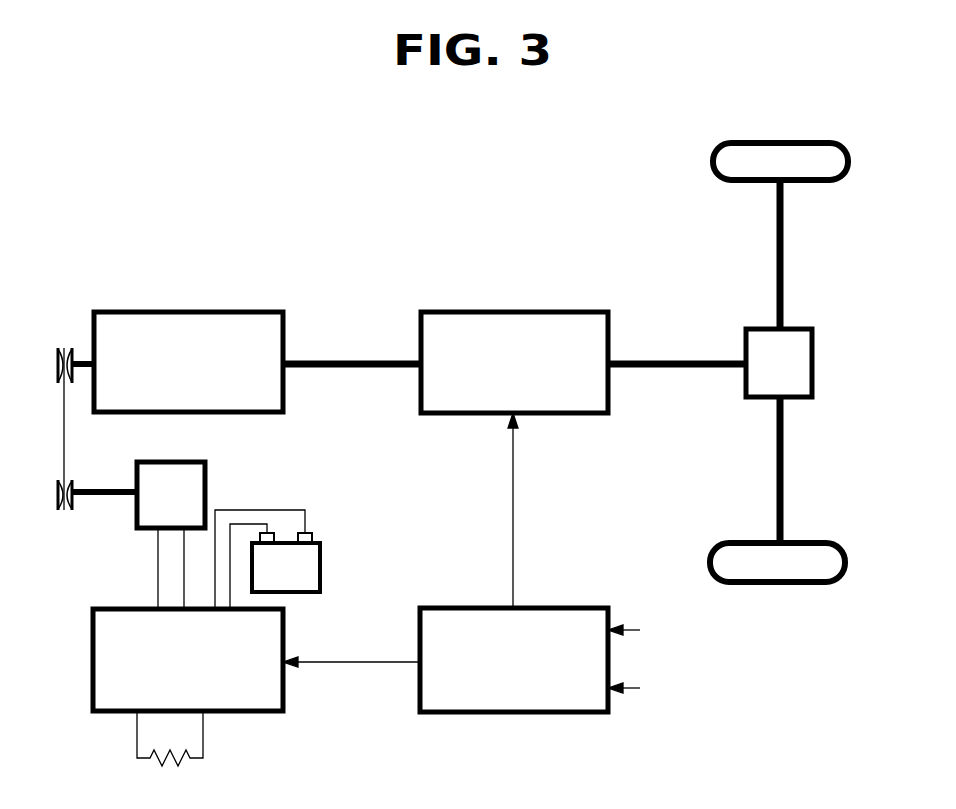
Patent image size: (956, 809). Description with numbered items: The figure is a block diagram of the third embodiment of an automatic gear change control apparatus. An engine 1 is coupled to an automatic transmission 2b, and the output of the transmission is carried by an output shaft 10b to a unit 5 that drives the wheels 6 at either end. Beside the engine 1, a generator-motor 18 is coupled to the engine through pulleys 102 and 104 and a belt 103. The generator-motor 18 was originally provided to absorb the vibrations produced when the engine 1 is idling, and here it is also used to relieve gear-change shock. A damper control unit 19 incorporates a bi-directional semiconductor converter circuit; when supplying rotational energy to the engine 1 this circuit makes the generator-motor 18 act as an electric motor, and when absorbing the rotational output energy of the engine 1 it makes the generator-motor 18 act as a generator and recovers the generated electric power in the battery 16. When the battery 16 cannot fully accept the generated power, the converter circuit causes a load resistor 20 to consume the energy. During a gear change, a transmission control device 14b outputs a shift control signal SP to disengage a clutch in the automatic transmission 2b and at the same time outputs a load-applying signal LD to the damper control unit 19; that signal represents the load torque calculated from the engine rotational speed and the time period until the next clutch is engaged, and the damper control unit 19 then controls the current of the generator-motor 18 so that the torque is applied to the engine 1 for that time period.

The engine 1 is at (237, 312).
The automatic transmission 2b is at (560, 312).
The differential gear 5 is at (812, 362).
The driving wheels 6 is at (812, 143).
The output shaft 10b is at (685, 368).
The transmission control device 14b is at (522, 712).
The battery 16 is at (305, 595).
The generator-motor 18 is at (205, 480).
The damper control unit 19 is at (93, 675).
The load resistor 20 is at (170, 760).
The pulley 102 is at (57, 360).
The belt 103 is at (64, 437).
The pulley 104 is at (57, 505).